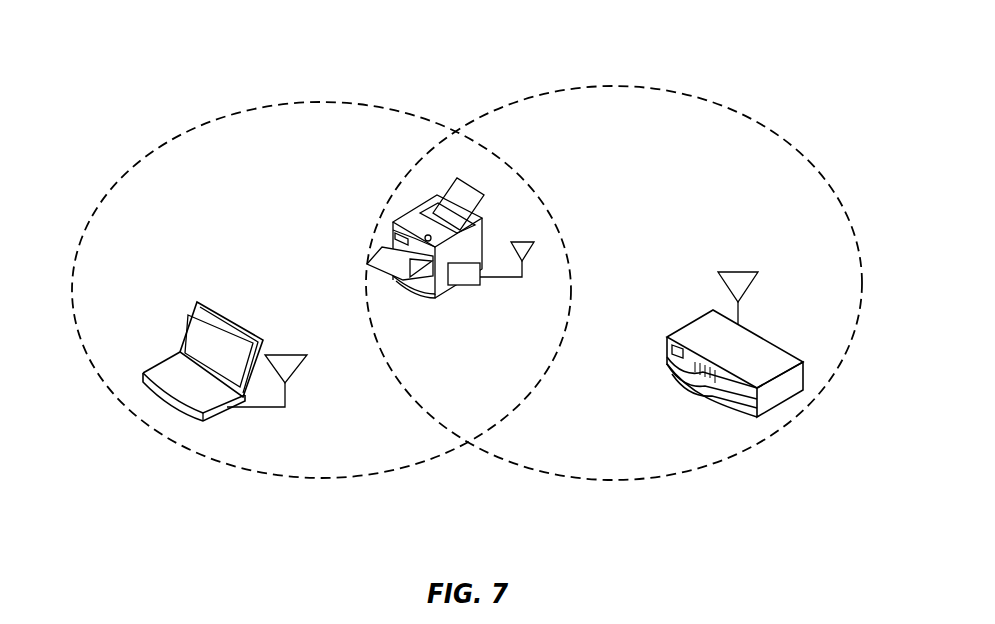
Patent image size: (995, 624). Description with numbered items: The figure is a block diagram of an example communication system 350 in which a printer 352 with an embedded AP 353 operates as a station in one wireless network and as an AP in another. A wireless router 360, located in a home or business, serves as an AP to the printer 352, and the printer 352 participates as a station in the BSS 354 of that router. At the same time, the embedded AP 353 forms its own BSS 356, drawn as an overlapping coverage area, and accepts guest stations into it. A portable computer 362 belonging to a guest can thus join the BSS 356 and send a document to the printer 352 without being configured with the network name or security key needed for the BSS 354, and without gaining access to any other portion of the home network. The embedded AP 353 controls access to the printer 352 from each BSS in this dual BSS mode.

The communication system 350 is at (572, 45).
The printer 352 is at (482, 225).
The embedded AP 353 is at (465, 273).
The BSS 354 is at (716, 132).
The BSS 356 is at (270, 143).
The wireless router 360 is at (777, 364).
The portable computer 362 is at (167, 362).